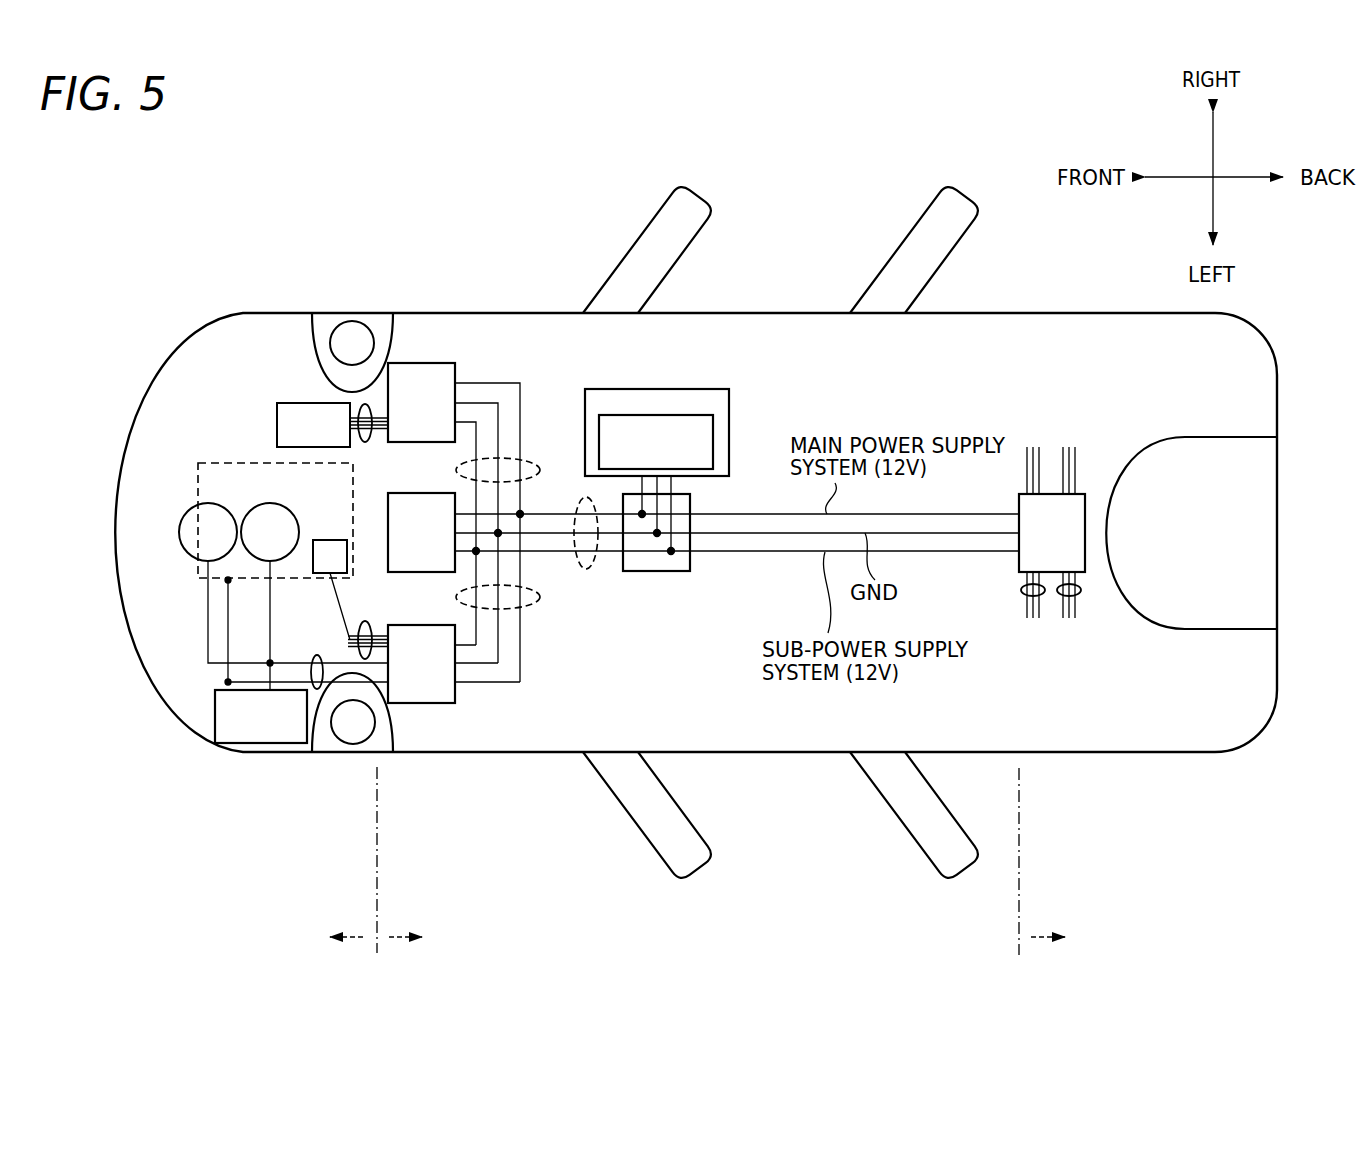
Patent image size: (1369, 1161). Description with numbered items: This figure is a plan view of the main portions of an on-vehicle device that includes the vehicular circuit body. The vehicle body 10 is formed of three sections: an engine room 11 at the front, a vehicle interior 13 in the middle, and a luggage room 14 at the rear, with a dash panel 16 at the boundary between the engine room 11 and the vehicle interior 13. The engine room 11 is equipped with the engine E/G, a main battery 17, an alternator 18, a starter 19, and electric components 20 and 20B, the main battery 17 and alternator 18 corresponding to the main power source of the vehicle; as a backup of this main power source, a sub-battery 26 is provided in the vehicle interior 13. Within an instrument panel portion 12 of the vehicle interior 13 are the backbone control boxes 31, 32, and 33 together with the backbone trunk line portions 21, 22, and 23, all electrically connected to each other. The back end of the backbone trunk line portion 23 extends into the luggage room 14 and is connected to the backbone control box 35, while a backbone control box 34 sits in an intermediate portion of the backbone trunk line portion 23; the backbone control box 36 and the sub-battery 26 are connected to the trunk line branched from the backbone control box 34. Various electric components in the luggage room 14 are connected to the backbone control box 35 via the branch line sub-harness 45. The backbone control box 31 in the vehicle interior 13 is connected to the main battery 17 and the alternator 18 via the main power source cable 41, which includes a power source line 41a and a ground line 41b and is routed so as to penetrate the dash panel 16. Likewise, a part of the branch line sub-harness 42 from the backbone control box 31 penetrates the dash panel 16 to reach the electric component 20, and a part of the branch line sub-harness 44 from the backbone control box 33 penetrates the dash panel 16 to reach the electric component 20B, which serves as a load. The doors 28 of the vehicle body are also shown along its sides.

The vehicle body 10 is at (1286, 368).
The engine room 11 is at (150, 430).
The instrument panel portion 12 is at (448, 303).
The vehicle interior 13 is at (985, 350).
The luggage room 14 is at (1213, 685).
The dash panel 16 is at (405, 330).
The main battery 17 is at (215, 713).
The alternator 18 is at (186, 507).
The starter 19 is at (243, 508).
The electric component 20 is at (330, 540).
The electric component (load) 20B is at (277, 425).
The backbone trunk line portion 21 is at (530, 604).
The backbone trunk line portion 22 is at (533, 458).
The backbone trunk line portion 23 is at (592, 568).
The sub-battery 26 is at (680, 389).
The door 28 is at (632, 243).
The backbone control box 31 is at (420, 703).
The backbone control box 32 is at (425, 572).
The backbone control box 33 is at (425, 442).
The backbone control box 34 is at (657, 571).
The backbone control box 35 is at (1087, 563).
The backbone control box 36 is at (713, 437).
The main power source cable 41 is at (320, 692).
The power source line 41a is at (297, 662).
The ground line 41b is at (297, 683).
The branch line sub-harness 42 is at (360, 638).
The branch line sub-harness 44 is at (363, 410).
The branch line sub-harness 45 is at (1020, 598).